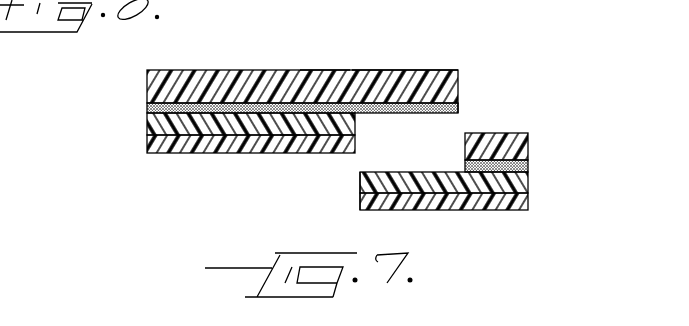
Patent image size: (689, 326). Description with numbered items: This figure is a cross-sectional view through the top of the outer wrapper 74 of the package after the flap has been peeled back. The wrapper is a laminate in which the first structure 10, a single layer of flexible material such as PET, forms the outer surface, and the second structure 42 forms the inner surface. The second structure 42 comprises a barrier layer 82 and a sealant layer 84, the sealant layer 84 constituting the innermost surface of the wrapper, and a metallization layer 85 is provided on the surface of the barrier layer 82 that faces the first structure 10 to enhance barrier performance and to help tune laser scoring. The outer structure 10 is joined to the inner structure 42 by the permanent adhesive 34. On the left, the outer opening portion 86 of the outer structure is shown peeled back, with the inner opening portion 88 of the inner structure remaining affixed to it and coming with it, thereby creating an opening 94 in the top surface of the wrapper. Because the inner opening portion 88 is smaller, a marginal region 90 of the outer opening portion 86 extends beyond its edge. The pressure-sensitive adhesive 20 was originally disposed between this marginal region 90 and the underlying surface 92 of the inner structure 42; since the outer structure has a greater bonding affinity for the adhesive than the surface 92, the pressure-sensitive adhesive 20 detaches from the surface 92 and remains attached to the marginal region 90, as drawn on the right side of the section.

The first structure 10 is at (147, 82).
The permanent adhesive 34 is at (147, 104).
The second structure 42 is at (336, 142).
The outer opening portion 86 is at (266, 64).
The inner opening portion 88 is at (175, 160).
The barrier layer 82 is at (529, 181).
The sealant layer 84 is at (528, 203).
The outer wrapper 74 is at (323, 63).
The marginal region 90 is at (458, 69).
The pressure-sensitive adhesive 20 is at (437, 122).
The metallization layer 85 is at (287, 138).
The underlying surface 92 is at (378, 188).
The opening 94 is at (358, 198).